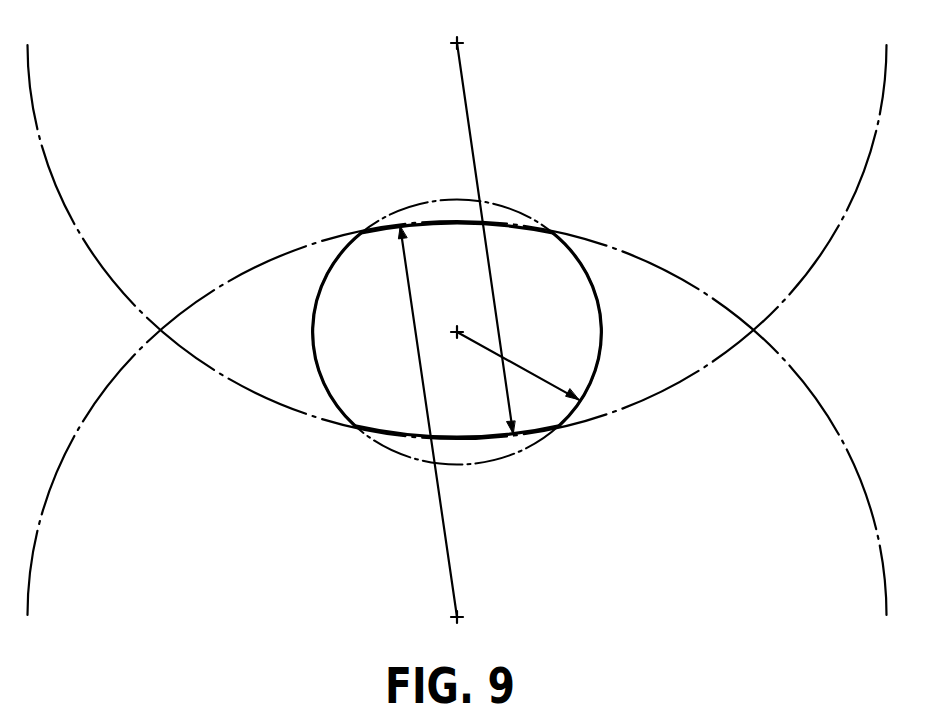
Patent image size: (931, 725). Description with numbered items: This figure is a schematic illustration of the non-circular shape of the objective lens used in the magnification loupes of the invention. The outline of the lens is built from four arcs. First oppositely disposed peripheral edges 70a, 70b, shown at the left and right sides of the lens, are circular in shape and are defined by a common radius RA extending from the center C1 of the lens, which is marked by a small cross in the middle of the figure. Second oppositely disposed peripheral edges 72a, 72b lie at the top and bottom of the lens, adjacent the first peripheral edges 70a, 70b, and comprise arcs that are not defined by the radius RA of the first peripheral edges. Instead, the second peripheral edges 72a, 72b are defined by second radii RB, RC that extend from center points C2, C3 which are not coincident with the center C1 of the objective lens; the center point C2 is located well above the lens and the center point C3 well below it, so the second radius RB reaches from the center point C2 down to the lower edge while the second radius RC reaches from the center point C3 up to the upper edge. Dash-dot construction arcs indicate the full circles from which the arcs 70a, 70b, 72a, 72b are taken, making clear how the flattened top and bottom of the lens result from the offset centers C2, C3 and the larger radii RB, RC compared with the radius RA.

The first peripheral edge 70a is at (313, 331).
The first peripheral edge 70b is at (603, 331).
The second peripheral edge 72a is at (524, 222).
The second peripheral edge 72b is at (396, 442).
The center of the lens C1 is at (457, 332).
The center point C2 is at (457, 226).
The center point C3 is at (457, 423).
The radius RA is at (518, 366).
The second radius RB is at (471, 145).
The second radius RC is at (409, 285).